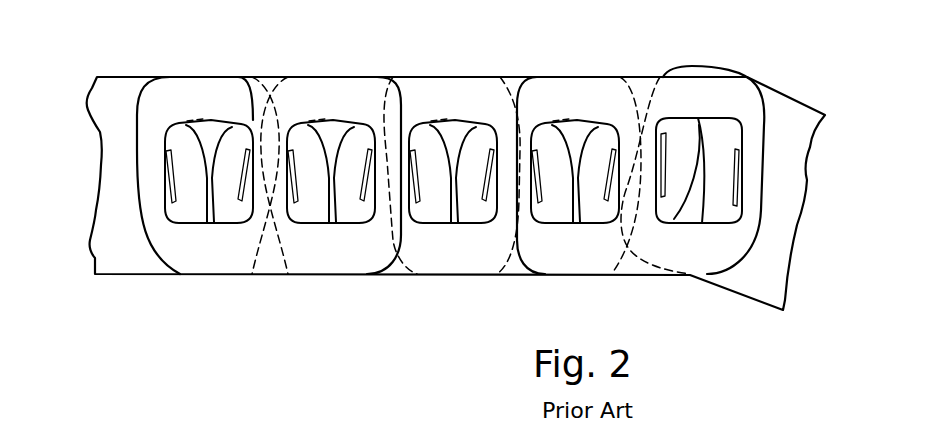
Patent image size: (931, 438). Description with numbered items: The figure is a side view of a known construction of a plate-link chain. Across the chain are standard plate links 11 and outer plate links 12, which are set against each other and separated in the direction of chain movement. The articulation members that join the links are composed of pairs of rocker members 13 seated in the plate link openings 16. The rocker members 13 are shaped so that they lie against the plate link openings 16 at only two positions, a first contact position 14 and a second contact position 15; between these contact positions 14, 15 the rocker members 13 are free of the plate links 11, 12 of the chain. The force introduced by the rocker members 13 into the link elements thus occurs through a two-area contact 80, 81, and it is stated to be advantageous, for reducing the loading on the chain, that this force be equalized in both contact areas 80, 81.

The standard plate link 11 is at (763, 287).
The outer plate link 12 is at (210, 88).
The rocker member 13 is at (480, 143).
The contact position 14 is at (499, 76).
The contact position 15 is at (480, 223).
The plate link opening 16 is at (440, 125).
The contact area 80 is at (740, 135).
The contact area 81 is at (717, 207).